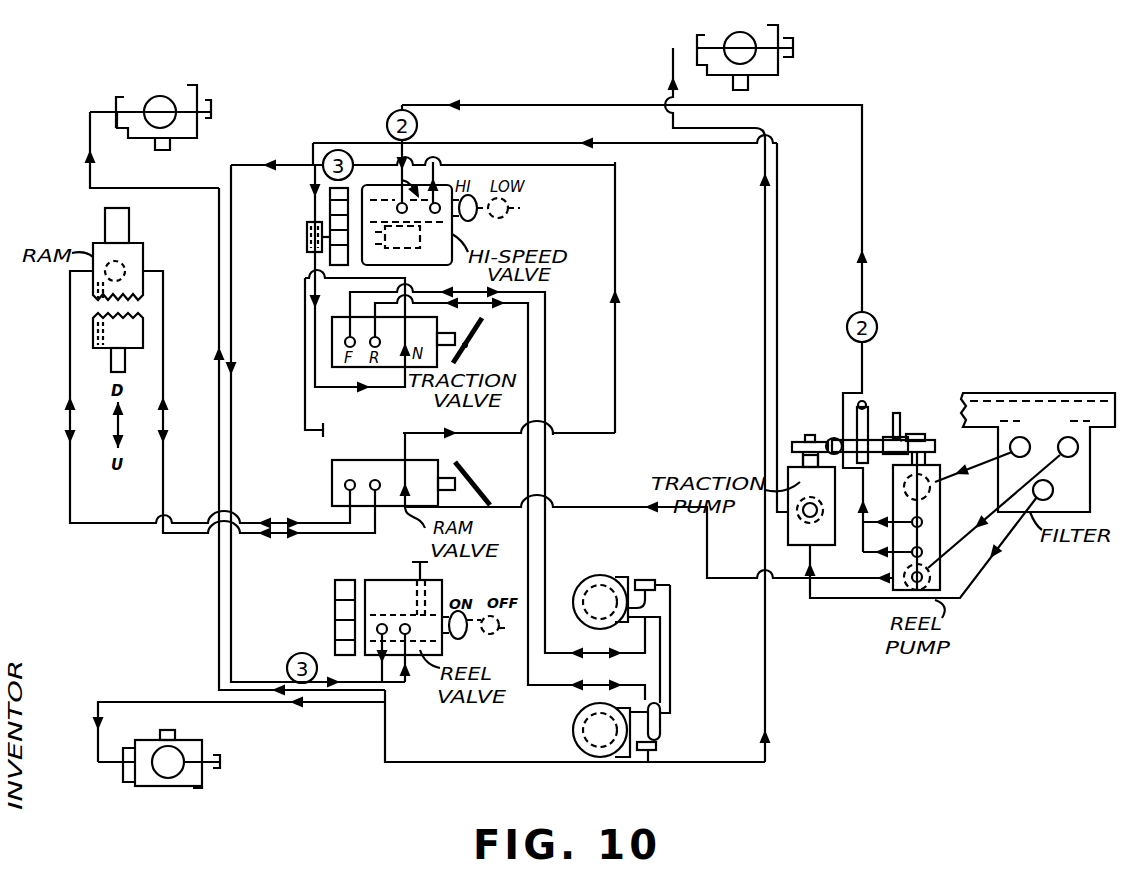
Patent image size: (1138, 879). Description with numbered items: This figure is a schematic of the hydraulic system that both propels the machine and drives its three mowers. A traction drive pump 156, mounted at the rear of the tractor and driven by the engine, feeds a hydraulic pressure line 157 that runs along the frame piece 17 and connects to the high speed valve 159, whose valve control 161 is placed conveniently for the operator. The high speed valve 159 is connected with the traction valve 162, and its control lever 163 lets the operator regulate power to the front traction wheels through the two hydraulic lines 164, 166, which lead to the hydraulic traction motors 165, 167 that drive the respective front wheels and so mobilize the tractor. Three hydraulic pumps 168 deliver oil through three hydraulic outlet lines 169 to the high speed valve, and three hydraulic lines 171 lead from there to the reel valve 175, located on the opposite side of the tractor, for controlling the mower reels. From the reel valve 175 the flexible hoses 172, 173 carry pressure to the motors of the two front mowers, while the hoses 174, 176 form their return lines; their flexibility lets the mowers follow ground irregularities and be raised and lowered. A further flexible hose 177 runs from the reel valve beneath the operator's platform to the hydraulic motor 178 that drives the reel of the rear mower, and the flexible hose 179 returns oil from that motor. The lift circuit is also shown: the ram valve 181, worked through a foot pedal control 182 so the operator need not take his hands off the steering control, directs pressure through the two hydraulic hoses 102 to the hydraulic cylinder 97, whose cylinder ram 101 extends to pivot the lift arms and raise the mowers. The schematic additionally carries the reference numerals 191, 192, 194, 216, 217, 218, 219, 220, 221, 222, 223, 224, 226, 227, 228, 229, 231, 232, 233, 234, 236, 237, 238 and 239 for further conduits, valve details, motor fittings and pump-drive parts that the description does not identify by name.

The frame piece 17 is at (1015, 393).
The hydraulic cylinder 97 is at (143, 256).
The cylinder ram 101 is at (121, 364).
The hydraulic hoses 102 is at (163, 497).
The traction drive pump 156 is at (818, 540).
The hydraulic pressure line 157 is at (778, 294).
The high speed valve 159 is at (400, 262).
The valve control 161 is at (500, 198).
The traction valve 162 is at (457, 329).
The control lever 163 is at (484, 340).
The hydraulic line 164 is at (528, 355).
The hydraulic traction motor 165 is at (573, 740).
The hydraulic line 166 is at (545, 386).
The hydraulic traction motor 167 is at (598, 576).
The hydraulic pumps 168 is at (940, 540).
The hydraulic outlet lines 169 is at (760, 578).
The hydraulic lines 171 is at (258, 160).
The flexible hose 172 is at (253, 704).
The flexible hose 173 is at (219, 669).
The hose 174 is at (202, 786).
The reel valve 175 is at (385, 583).
The hose 176 is at (197, 138).
The flexible hose 177 is at (436, 763).
The hydraulic motor 178 is at (778, 66).
The flexible hose 179 is at (781, 42).
The ram valve 181 is at (368, 454).
The foot pedal control 182 is at (480, 483).
The filter line 191 is at (993, 455).
The filter line 192 is at (1000, 548).
The drain line 194 is at (830, 598).
The conduit 216 is at (552, 438).
The reel valve knob 217 is at (496, 636).
The reel motor housing 218 is at (178, 733).
The reel motor 219 is at (197, 85).
The pilot line 220 is at (305, 300).
The solenoid 221 is at (307, 238).
The pilot line 222 is at (315, 272).
The flow divider valve 223 is at (645, 580).
The line 224 is at (672, 620).
The relief valve 226 is at (657, 748).
The check valve 227 is at (662, 725).
The plugged port 228 is at (305, 378).
The reel valve detent 229 is at (428, 562).
The coupling flange 231 is at (918, 434).
The coupling 232 is at (805, 438).
The pump control lever 233 is at (866, 404).
The coupling sleeve 234 is at (881, 437).
The drive coupling 236 is at (832, 440).
The pin 237 is at (900, 425).
The drive linkage 238 is at (898, 438).
The ram seal 239 is at (93, 268).